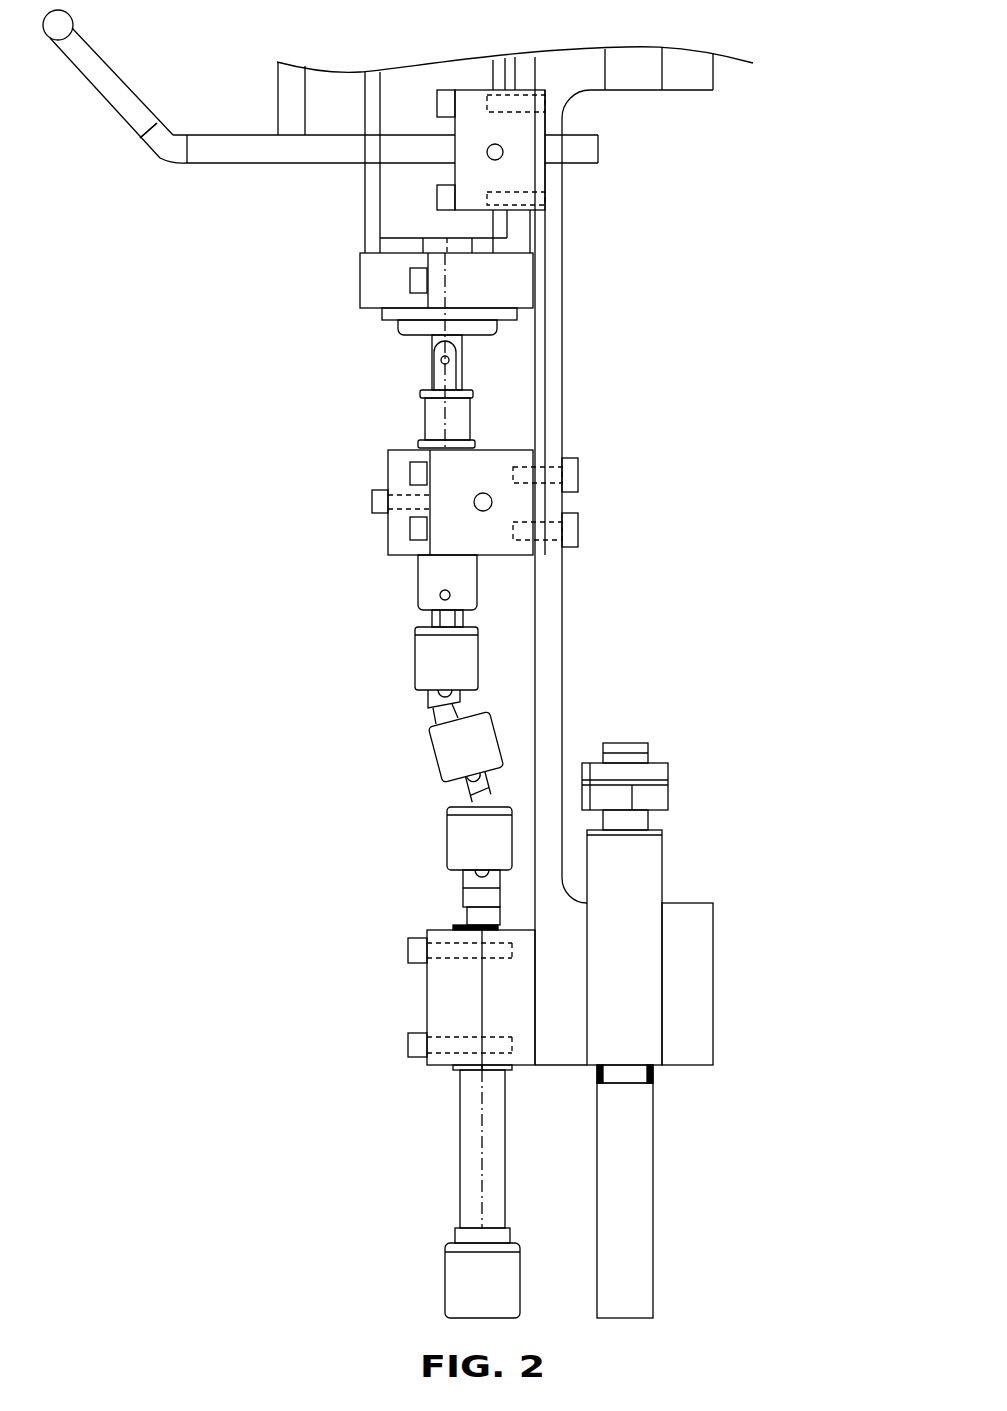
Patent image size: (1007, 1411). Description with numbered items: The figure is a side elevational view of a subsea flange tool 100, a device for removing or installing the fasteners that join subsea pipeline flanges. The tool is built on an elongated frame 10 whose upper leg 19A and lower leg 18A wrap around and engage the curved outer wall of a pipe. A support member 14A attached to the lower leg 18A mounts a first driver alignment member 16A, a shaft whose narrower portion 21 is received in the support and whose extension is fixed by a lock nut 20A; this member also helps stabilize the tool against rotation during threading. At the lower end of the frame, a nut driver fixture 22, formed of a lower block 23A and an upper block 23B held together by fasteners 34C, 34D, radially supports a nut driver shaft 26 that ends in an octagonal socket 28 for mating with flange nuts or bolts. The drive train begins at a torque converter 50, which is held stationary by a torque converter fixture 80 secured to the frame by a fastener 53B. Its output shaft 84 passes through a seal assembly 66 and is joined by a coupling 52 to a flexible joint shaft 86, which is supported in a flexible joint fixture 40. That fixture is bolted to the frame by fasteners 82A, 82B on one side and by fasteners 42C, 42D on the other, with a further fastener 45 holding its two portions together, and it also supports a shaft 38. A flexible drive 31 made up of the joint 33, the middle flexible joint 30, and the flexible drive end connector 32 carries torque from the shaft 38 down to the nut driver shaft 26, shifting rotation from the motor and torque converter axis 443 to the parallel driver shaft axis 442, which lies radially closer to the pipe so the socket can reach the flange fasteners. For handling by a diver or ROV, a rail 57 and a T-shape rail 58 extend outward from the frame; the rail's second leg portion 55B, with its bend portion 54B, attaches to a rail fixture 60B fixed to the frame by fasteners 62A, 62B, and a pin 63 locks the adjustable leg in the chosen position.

The subsea flange tool 100 is at (148, 659).
The frame 10 is at (555, 612).
The support member 14A is at (640, 882).
The first driver alignment member 16A is at (640, 1225).
The first leg 18A is at (700, 978).
The leg 19A is at (697, 65).
The lock nut 20A is at (650, 760).
The narrower portion 21 is at (652, 1076).
The nut driver fixture 22 is at (425, 1000).
The lower block 23A is at (517, 1062).
The upper block 23B is at (445, 1062).
The nut driver shaft 26 is at (460, 1185).
The socket 28 is at (445, 1290).
The middle flexible joint 30 is at (445, 753).
The flexible drive 31 is at (375, 719).
The flexible drive end connector 32 is at (452, 843).
The joint 33 is at (418, 660).
The fastener 34C is at (410, 950).
The fastener 34D is at (410, 1043).
The shaft 38 is at (423, 585).
The flexible joint fixture 40 is at (495, 470).
The fastener 42C is at (412, 472).
The fastener 42D is at (412, 530).
The fastener 45 is at (372, 500).
The torque converter 50 is at (475, 230).
The coupling 52 is at (440, 362).
The fastener 53B is at (412, 282).
The bend portion 54B is at (160, 158).
The second leg portion 55B is at (290, 163).
The rail 57 is at (88, 72).
The T-shape rail 58 is at (282, 100).
The second rail fixture 60B is at (520, 137).
The fastener 62A is at (437, 105).
The fastener 62B is at (437, 197).
The pin 63 is at (485, 152).
The seal assembly 66 is at (500, 327).
The torque converter fixture 80 is at (383, 268).
The fastener 82A is at (580, 475).
The fastener 82B is at (580, 528).
The output shaft 84 is at (463, 357).
The flexible joint shaft 86 is at (425, 413).
The driver shaft axis 442 is at (485, 1145).
The motor axis 443 is at (450, 432).